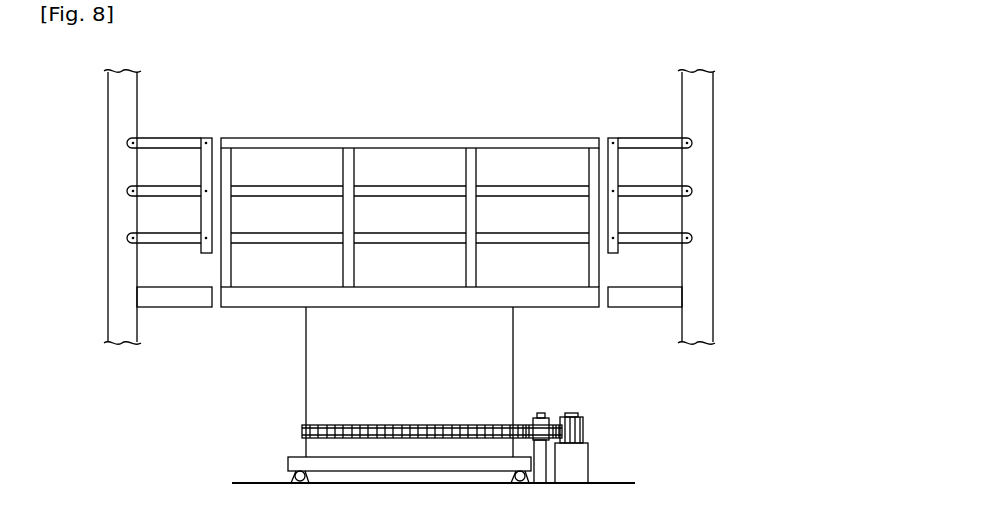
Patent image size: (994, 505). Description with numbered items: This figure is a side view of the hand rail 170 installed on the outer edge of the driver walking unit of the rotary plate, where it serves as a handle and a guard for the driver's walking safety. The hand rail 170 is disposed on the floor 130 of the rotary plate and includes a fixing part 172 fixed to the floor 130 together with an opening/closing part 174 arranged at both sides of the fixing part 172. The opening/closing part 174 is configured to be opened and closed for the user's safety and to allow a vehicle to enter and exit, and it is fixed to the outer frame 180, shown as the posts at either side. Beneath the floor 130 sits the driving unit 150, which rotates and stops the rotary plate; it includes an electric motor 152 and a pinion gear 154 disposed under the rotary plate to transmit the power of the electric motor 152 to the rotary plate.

The floor 130 is at (262, 297).
The driving unit 150 is at (489, 431).
The electric motor 152 is at (595, 448).
The pinion gear 154 is at (487, 425).
The hand rail 170 is at (409, 152).
The fixing part 172 is at (540, 138).
The opening/closing part 174 is at (552, 82).
The outer frame 180 is at (113, 108).